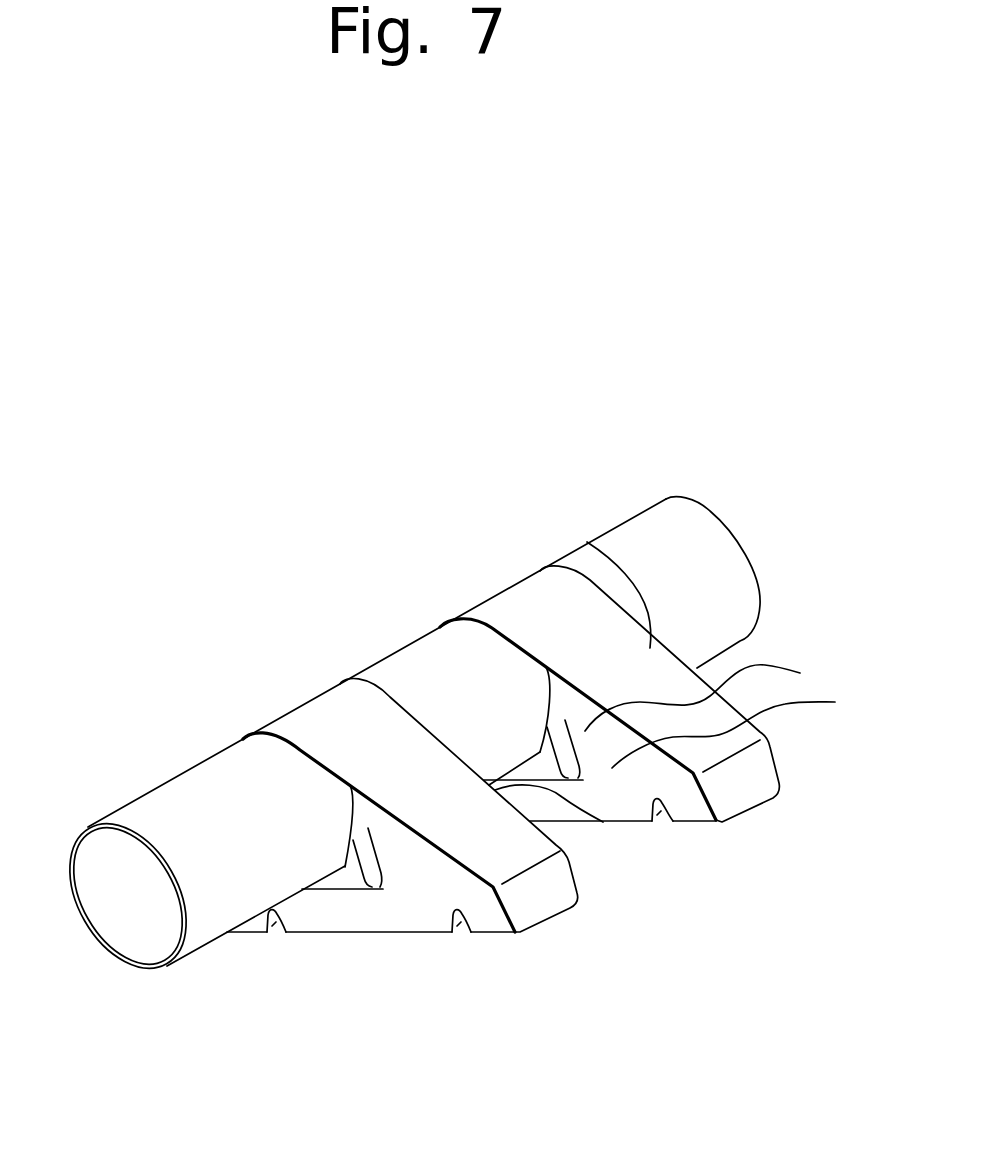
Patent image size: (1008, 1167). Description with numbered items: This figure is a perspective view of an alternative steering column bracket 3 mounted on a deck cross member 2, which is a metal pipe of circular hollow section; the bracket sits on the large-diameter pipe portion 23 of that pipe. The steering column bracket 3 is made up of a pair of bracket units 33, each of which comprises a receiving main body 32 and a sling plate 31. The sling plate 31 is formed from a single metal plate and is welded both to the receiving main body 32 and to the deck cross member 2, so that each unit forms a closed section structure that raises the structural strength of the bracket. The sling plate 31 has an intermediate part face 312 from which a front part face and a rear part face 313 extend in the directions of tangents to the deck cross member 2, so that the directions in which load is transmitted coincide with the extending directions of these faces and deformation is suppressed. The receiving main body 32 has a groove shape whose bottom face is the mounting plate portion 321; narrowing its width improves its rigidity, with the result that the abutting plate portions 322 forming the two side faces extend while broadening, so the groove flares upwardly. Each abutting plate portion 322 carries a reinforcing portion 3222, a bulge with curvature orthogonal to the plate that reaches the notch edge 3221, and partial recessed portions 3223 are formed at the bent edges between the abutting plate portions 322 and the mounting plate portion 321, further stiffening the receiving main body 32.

The deck cross member 2 is at (624, 506).
The large-diameter pipe portion 23 is at (178, 786).
The steering column bracket 3 is at (328, 486).
The sling plate 31 is at (508, 596).
The intermediate part face 312 is at (512, 603).
The rear part face 313 is at (542, 608).
The bracket unit 33 is at (458, 600).
The receiving main body 32 is at (257, 1047).
The mounting plate portion 321 is at (360, 917).
The abutting plate portion 322 is at (750, 729).
The notch edge 3221 is at (320, 889).
The reinforcing portion 3222 is at (387, 887).
The recessed portion 3223 is at (241, 932).